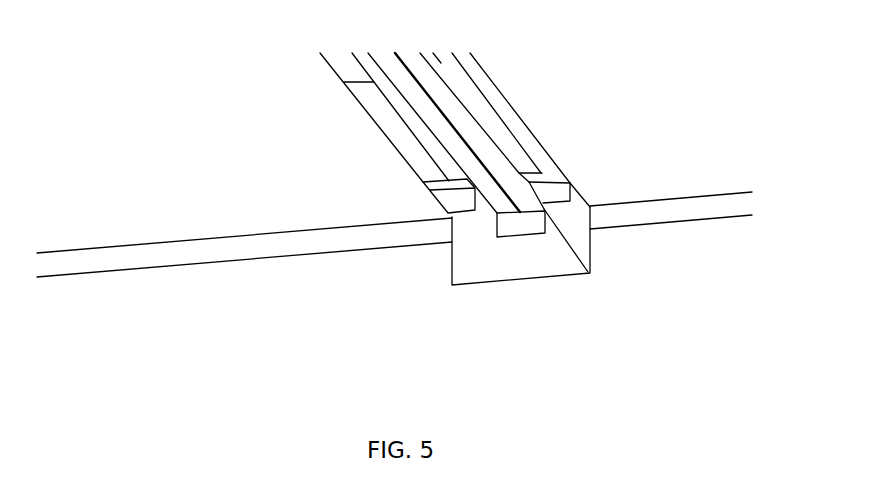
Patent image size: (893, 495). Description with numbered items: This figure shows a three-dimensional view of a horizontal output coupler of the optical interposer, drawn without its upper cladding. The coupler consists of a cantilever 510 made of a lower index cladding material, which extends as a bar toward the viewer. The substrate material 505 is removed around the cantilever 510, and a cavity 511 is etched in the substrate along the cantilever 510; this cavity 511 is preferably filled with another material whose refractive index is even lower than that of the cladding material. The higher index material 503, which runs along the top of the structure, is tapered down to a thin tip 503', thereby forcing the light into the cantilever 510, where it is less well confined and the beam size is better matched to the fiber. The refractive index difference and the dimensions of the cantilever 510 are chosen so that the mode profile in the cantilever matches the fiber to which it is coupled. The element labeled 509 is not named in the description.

The higher index material 503 is at (482, 116).
The thin tip 503' is at (365, 117).
The substrate material 505 is at (570, 222).
The base block / substrate 509 is at (553, 258).
The cantilever 510 is at (488, 156).
The cavity 511 is at (425, 165).